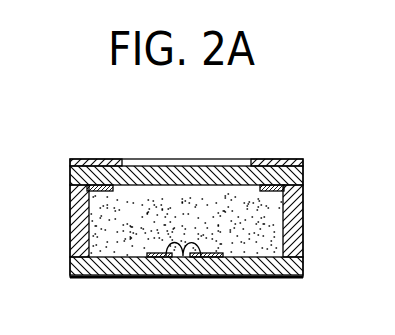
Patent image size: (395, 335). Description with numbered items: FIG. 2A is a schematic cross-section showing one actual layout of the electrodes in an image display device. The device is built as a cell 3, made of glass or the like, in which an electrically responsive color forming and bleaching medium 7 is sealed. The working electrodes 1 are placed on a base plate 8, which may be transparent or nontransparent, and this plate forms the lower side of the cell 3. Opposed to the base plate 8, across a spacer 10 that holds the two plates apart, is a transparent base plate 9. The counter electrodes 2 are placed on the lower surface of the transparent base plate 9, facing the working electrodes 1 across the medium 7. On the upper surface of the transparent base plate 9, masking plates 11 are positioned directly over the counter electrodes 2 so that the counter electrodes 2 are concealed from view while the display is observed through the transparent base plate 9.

The working electrode 1 is at (182, 257).
The counter electrode 2 is at (103, 191).
The cell 3 is at (70, 158).
The electrically responsive color forming and bleaching medium 7 is at (240, 243).
The base plate 8 is at (133, 278).
The transparent base plate 9 is at (184, 176).
The spacer 10 is at (78, 220).
The masking plate 11 is at (97, 158).